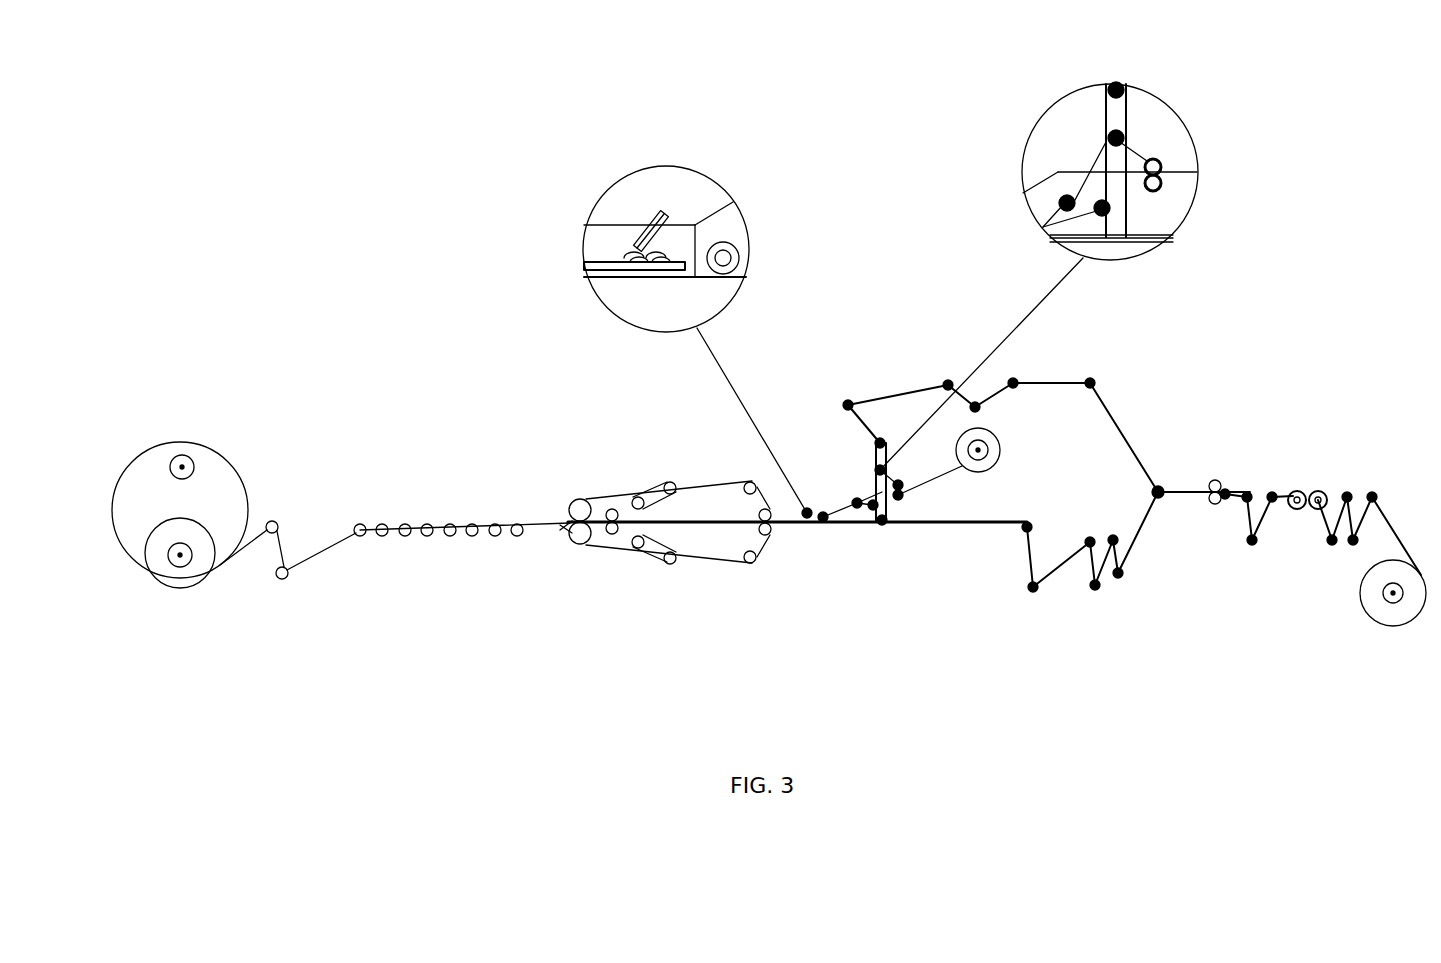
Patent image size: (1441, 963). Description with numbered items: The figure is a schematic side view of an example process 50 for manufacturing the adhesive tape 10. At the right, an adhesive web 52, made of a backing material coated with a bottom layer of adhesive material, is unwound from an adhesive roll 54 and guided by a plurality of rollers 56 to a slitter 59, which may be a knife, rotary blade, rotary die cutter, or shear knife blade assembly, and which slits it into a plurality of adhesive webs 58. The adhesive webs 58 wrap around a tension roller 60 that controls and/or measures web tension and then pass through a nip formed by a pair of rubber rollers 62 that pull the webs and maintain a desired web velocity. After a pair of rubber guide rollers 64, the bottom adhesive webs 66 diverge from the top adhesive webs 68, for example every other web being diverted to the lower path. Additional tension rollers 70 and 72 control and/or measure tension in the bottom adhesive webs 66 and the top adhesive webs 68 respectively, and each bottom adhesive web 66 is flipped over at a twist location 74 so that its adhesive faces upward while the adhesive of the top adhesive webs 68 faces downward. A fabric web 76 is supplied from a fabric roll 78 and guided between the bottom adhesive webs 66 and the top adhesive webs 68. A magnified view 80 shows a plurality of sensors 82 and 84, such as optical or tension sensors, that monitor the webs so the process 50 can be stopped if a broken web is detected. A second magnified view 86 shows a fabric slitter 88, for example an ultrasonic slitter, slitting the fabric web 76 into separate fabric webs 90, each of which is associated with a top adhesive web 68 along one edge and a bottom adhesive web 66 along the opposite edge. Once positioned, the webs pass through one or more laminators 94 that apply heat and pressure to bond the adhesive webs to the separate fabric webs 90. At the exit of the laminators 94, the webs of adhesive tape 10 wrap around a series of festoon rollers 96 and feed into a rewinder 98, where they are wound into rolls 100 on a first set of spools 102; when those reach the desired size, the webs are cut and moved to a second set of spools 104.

The process 50 is at (392, 340).
The adhesive tape 10 is at (310, 549).
The rewinder 98 is at (229, 462).
The rolls 100 is at (184, 588).
The first set of spools 102 is at (170, 562).
The second set of spools 104 is at (175, 458).
The festoon rollers 96 is at (487, 536).
The laminators 94 is at (668, 583).
The second magnified view 86 is at (718, 172).
The fabric slitter 88 is at (658, 215).
The separate fabric webs 90 is at (600, 260).
The fabric web 76 is at (938, 490).
The fabric roll 78 is at (1002, 452).
The tension roller 72 is at (1013, 392).
The top adhesive webs 68 is at (1118, 428).
The rubber guide rollers 64 is at (1152, 492).
The bottom adhesive webs 66 is at (1135, 540).
The tension roller 70 is at (1116, 582).
The twist location 74 is at (1019, 575).
The sensor 84 is at (1098, 103).
The magnified view 80 is at (1197, 172).
The sensor 82 is at (1116, 244).
The rubber rollers 62 is at (1203, 478).
The adhesive webs 58 is at (1247, 510).
The tension roller 60 is at (1254, 548).
The slitter 59 is at (1307, 485).
The rollers 56 is at (1333, 550).
The adhesive web 52 is at (1380, 508).
The adhesive roll 54 is at (1388, 626).